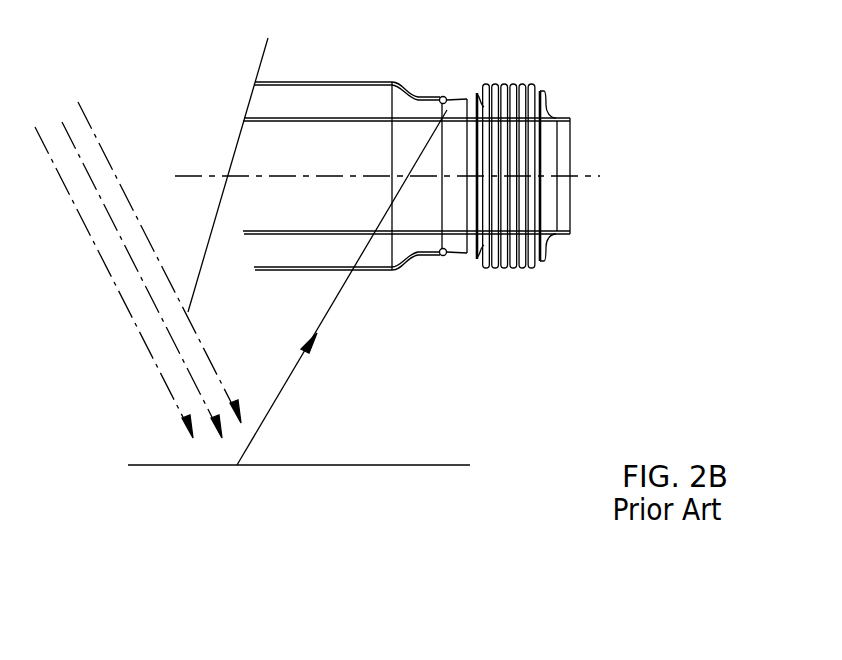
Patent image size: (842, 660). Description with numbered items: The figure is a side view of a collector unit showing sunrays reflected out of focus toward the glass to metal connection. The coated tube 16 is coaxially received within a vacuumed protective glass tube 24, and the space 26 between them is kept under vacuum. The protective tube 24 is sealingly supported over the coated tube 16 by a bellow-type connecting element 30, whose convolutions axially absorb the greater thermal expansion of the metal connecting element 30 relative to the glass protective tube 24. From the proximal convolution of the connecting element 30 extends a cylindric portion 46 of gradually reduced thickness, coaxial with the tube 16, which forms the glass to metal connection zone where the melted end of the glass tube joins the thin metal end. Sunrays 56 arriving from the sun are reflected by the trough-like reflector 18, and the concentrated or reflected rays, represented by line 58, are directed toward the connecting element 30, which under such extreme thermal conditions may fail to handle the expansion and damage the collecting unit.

The coated tube 16 is at (278, 120).
The solar reflector 18 is at (170, 465).
The protective glass tube 24 is at (323, 82).
The space 26 is at (355, 112).
The bellow-type connecting element 30 is at (510, 272).
The cylindric portion 46 is at (462, 88).
The sunrays 56 is at (90, 175).
The line representing reflected sunrays 58 is at (332, 305).